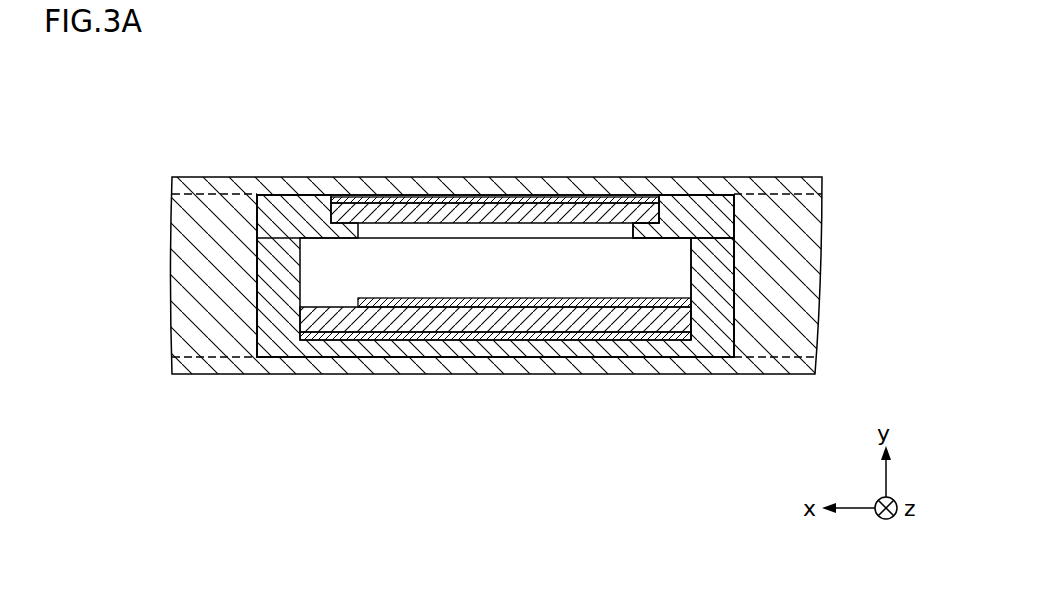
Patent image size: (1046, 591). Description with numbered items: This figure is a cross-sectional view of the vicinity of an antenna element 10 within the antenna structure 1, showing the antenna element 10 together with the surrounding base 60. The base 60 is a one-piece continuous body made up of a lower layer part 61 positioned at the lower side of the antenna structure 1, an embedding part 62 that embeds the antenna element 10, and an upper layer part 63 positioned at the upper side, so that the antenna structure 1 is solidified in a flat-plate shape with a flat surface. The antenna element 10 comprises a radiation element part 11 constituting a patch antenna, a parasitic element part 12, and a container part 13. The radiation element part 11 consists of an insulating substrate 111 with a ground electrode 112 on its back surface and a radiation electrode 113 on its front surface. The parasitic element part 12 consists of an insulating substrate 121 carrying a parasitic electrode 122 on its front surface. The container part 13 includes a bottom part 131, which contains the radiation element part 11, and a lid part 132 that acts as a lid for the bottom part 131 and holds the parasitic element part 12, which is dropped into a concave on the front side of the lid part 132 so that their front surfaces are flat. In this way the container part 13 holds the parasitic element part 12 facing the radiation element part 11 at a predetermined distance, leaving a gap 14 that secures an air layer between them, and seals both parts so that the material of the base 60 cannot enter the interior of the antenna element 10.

The antenna structure 1 is at (273, 106).
The antenna element 10 is at (600, 172).
The radiation element part 11 is at (489, 400).
The insulating substrate 111 is at (322, 318).
The ground electrode 112 is at (380, 338).
The radiation electrode 113 is at (440, 302).
The parasitic element part 12 is at (490, 145).
The insulating substrate 121 is at (433, 117).
The parasitic electrode 122 is at (400, 197).
The container part 13 is at (770, 117).
The bottom part 131 is at (712, 248).
The lid part 132 is at (678, 215).
The gap 14 is at (517, 263).
The base 60 is at (903, 167).
The lower layer part 61 is at (800, 362).
The embedding part 62 is at (800, 278).
The upper layer part 63 is at (800, 187).